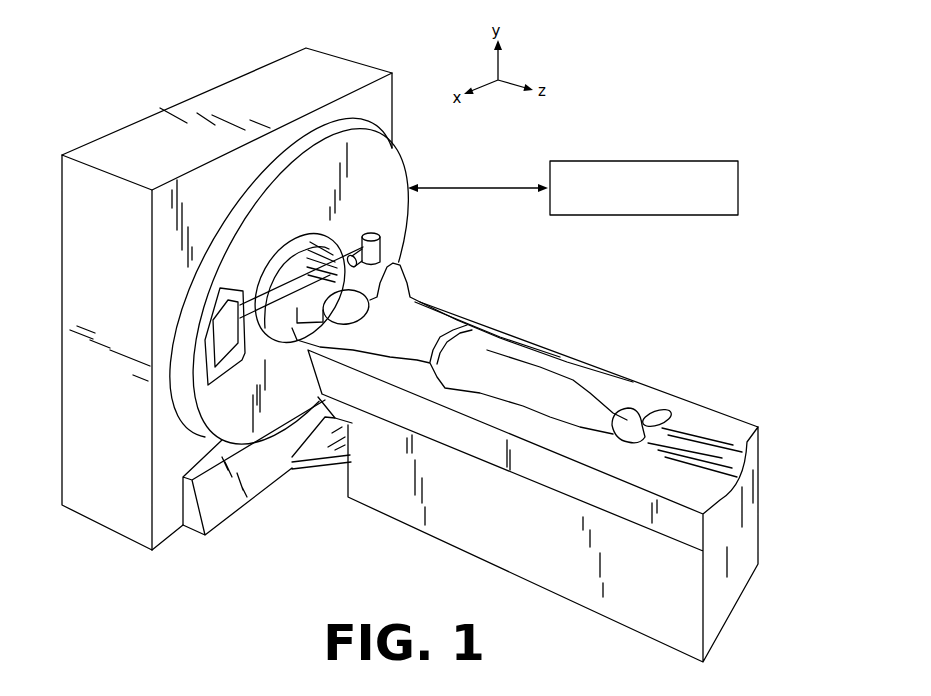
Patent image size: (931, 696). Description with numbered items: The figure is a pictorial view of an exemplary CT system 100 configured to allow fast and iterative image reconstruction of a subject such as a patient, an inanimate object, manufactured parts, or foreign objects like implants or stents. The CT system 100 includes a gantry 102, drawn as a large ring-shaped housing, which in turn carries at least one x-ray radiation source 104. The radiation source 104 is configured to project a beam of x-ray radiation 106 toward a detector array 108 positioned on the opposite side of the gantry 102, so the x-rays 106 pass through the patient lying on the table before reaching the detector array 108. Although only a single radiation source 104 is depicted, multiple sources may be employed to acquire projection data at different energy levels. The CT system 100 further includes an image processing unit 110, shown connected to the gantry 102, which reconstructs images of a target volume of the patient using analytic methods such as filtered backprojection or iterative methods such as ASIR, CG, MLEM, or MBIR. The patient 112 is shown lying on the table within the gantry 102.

The CT system 100 is at (684, 30).
The gantry 102 is at (387, 191).
The x-ray radiation source 104 is at (382, 253).
The beam of x-ray radiation 106 is at (273, 300).
The detector array 108 is at (227, 363).
The image processing unit 110 is at (697, 160).
The patient 112 is at (422, 318).